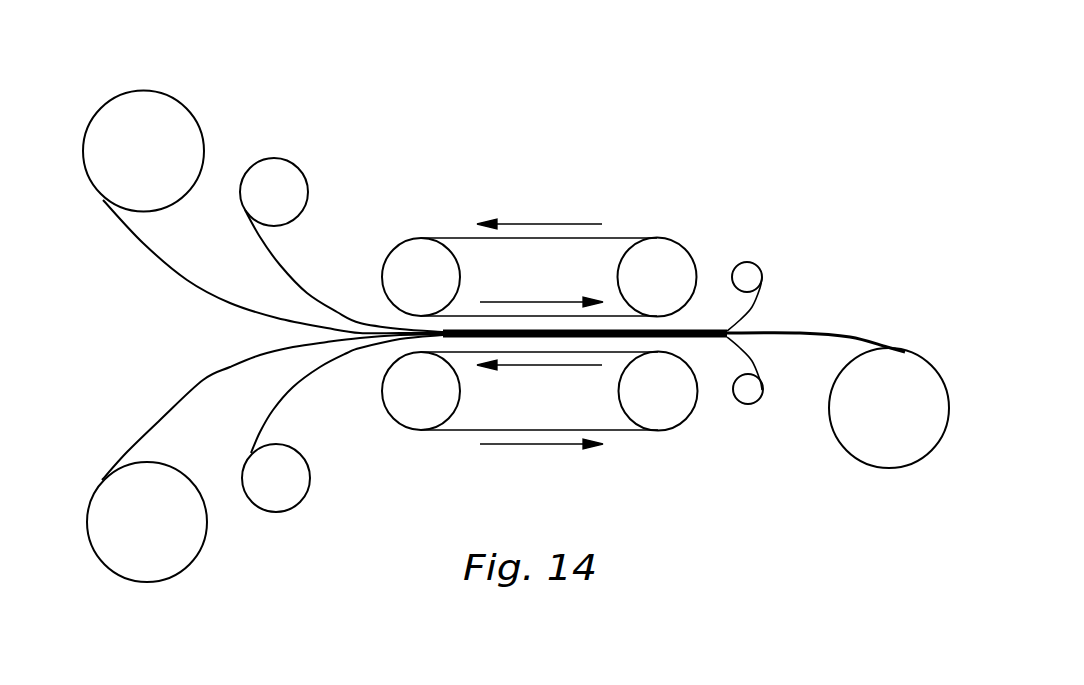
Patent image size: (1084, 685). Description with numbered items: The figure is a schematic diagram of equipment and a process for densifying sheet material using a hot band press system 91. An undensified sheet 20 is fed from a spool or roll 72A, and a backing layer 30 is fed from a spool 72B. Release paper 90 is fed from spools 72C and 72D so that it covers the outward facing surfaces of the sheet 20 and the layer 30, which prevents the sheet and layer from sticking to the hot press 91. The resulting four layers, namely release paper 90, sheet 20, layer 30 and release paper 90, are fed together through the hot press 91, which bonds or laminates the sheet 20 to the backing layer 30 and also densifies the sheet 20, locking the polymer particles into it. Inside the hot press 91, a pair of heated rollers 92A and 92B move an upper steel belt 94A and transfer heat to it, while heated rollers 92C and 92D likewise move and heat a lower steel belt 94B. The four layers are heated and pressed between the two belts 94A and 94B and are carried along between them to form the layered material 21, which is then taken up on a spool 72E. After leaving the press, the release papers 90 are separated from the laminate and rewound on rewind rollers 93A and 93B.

The spool 72A is at (122, 92).
The spool 72B is at (137, 582).
The spool 72C is at (267, 160).
The spool 72D is at (258, 509).
The spool 72E is at (900, 458).
The undensified sheet 20 is at (227, 303).
The backing layer 30 is at (227, 367).
The release paper 90 is at (280, 265).
The hot band press system 91 is at (611, 283).
The heated roller 92A is at (412, 252).
The heated roller 92B is at (661, 252).
The heated roller 92C is at (393, 403).
The heated roller 92D is at (661, 418).
The steel belt 94A is at (539, 267).
The steel belt 94B is at (539, 400).
The rewind roller 93A is at (743, 267).
The rewind roller 93B is at (745, 402).
The layered material 21 is at (808, 312).